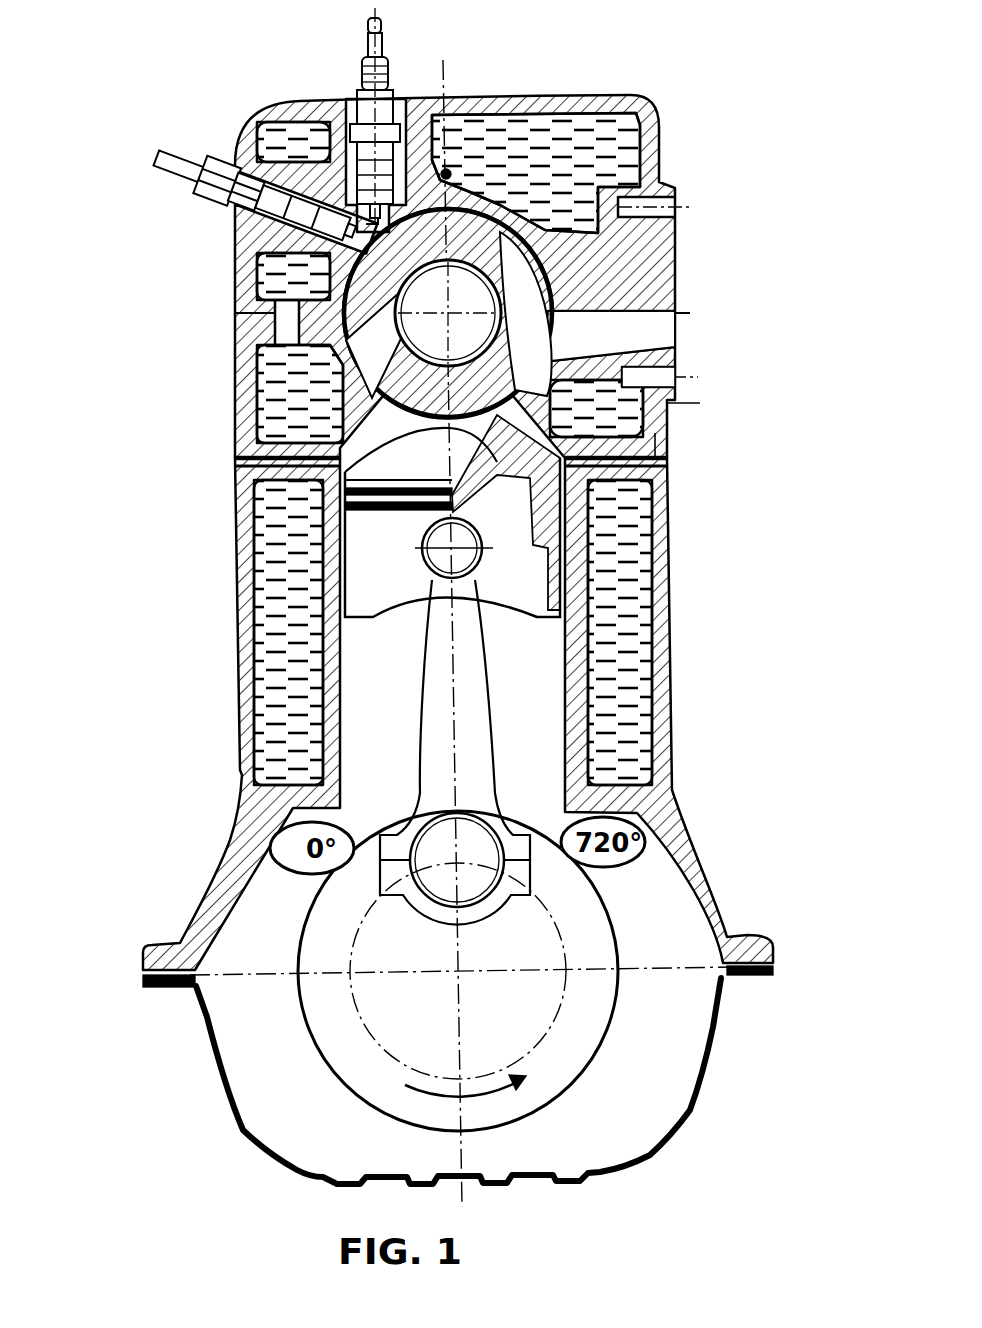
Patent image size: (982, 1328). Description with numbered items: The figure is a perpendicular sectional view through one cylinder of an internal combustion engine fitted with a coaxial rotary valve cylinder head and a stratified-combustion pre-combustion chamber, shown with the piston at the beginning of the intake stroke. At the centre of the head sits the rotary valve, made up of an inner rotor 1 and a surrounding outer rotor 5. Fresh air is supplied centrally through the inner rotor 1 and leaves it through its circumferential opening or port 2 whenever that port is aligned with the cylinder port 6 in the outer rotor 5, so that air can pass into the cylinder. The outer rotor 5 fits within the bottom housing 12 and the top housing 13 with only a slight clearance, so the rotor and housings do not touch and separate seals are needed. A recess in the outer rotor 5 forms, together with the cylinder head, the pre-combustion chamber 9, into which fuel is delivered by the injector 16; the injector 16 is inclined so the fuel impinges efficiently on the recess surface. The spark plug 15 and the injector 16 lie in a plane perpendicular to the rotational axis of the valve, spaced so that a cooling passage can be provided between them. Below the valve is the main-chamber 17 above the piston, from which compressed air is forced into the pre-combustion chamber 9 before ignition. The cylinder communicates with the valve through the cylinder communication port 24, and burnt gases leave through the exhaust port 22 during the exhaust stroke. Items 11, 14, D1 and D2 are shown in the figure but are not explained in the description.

The inner rotor 1 is at (330, 262).
The circumferential opening or port 2 is at (317, 325).
The outer rotor 5 is at (300, 310).
The cylinder port 6 is at (387, 373).
The pre-combustion chamber 9 is at (531, 280).
The coolant cavity 11 is at (293, 147).
The bottom housing 12 is at (667, 453).
The top housing 13 is at (648, 107).
The lubrication hole 14 is at (448, 171).
The spark plug 15 is at (380, 97).
The injector 16 is at (233, 173).
The main-chamber 17 is at (388, 445).
The exhaust port 22 is at (623, 332).
The cylinder communication port 24 is at (315, 457).
The diameter D1 is at (673, 403).
The diameter D2 is at (655, 433).